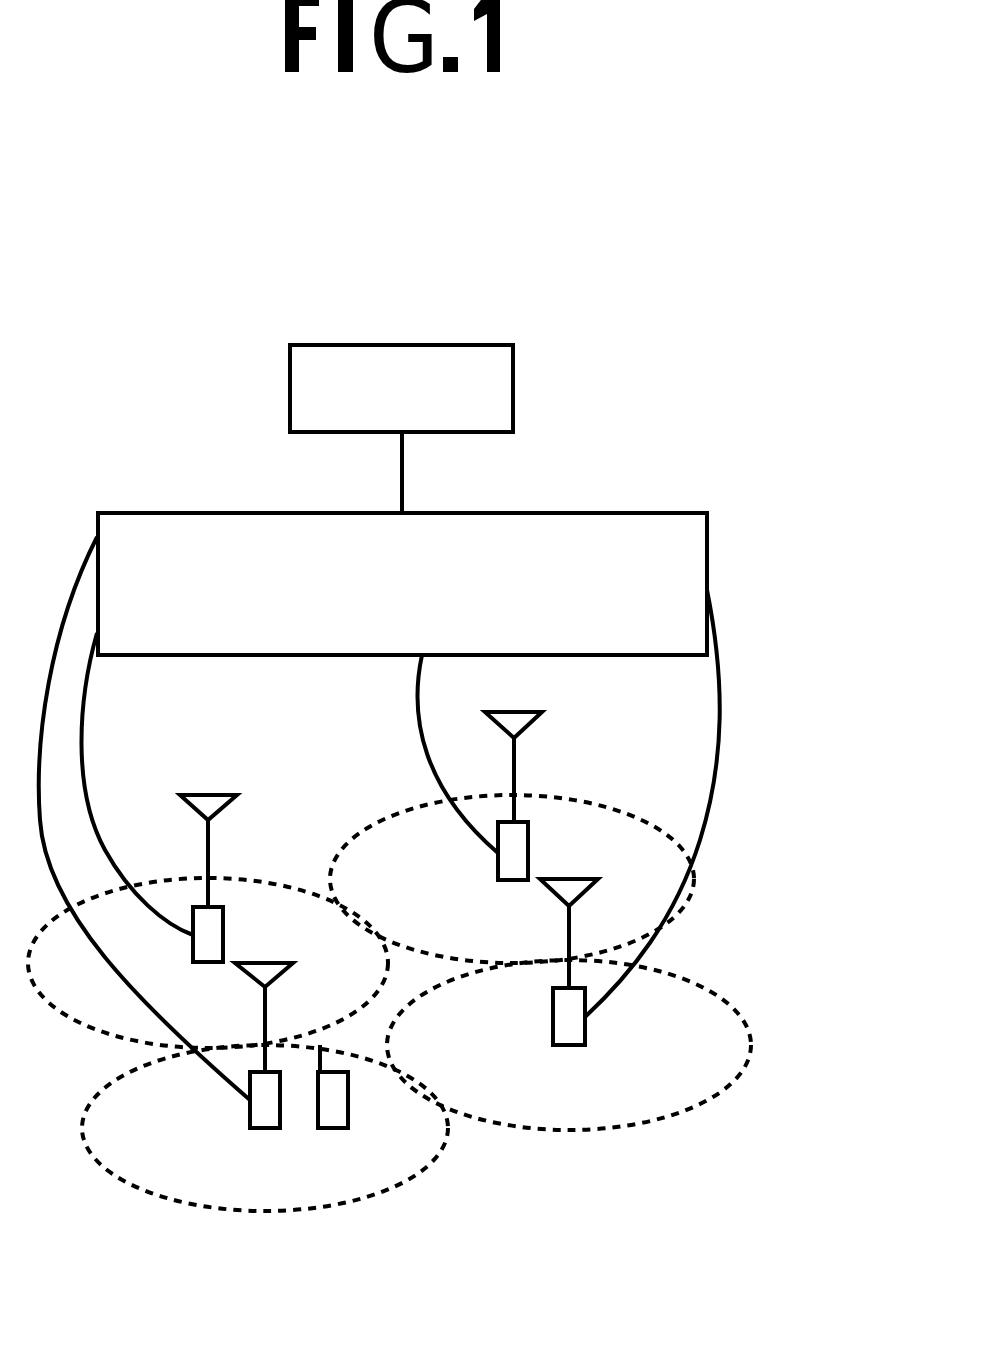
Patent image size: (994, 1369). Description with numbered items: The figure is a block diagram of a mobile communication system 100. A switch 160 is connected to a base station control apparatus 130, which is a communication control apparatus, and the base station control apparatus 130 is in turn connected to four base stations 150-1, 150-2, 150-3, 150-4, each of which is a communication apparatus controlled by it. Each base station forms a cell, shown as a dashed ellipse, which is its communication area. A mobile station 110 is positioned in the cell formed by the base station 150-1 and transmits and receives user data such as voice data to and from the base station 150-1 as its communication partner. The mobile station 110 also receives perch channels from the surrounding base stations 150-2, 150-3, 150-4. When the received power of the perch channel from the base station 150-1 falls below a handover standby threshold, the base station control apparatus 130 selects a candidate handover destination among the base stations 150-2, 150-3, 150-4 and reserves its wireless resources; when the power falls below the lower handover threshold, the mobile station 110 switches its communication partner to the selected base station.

The mobile communication system 100 is at (746, 259).
The switch 160 is at (462, 343).
The base station control apparatus 130 is at (577, 512).
The base station 150-1 is at (250, 1115).
The base station 150-2 is at (569, 1045).
The base station 150-3 is at (223, 937).
The base station 150-4 is at (498, 862).
The mobile station 110 is at (337, 1128).